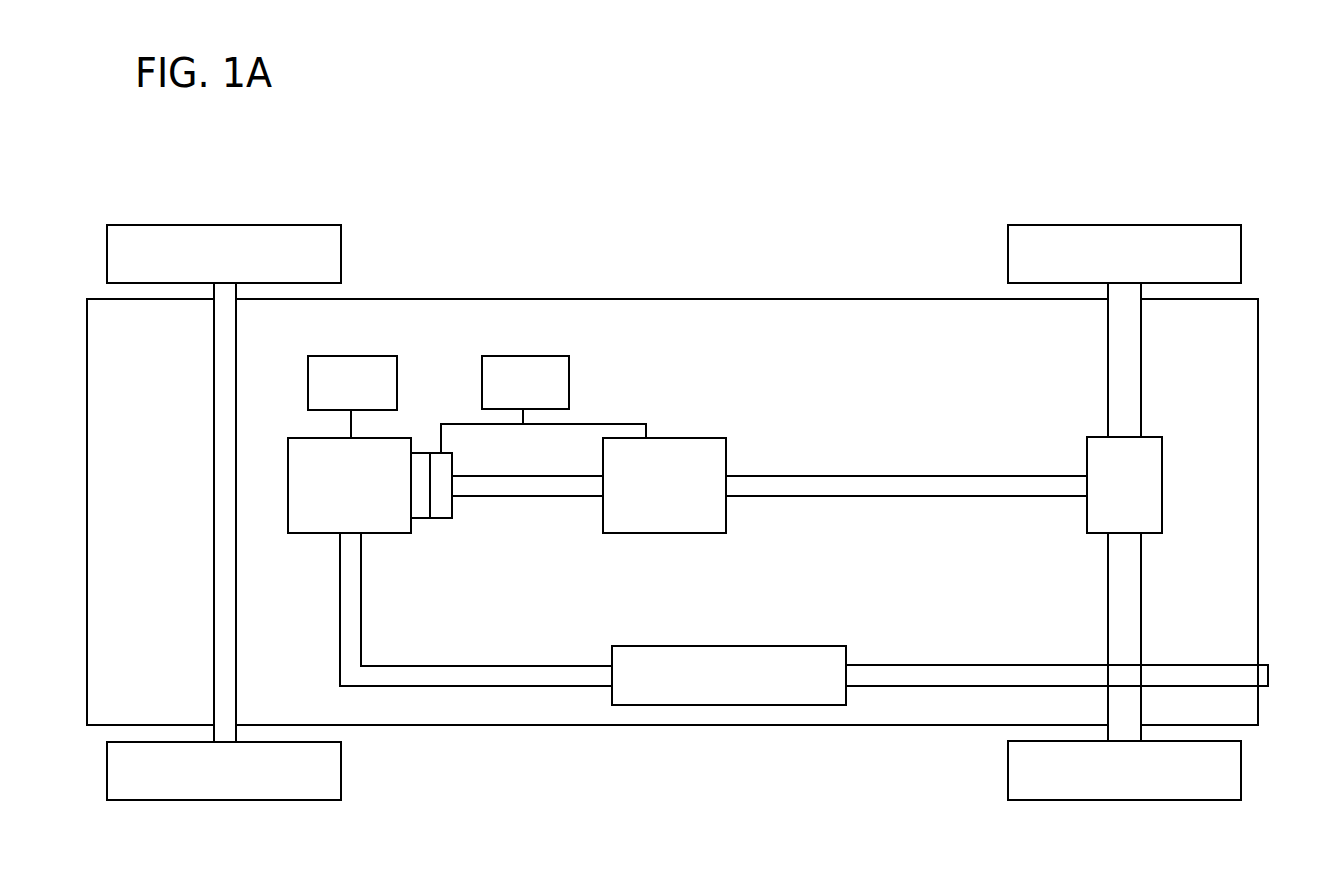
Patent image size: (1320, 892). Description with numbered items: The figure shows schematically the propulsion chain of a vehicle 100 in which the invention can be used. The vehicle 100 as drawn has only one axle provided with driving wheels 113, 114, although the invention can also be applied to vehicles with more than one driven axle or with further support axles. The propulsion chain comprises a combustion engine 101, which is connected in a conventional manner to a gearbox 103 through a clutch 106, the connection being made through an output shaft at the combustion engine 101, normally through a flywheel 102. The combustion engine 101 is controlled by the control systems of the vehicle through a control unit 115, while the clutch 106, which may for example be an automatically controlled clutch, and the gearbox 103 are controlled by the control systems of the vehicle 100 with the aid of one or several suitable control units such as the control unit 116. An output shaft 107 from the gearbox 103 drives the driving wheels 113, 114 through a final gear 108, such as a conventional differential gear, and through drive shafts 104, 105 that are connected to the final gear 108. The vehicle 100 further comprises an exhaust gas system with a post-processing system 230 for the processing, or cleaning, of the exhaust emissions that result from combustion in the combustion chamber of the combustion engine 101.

The vehicle 100 is at (570, 127).
The combustion engine 101 is at (320, 523).
The flywheel 102 is at (426, 517).
The gearbox 103 is at (667, 448).
The drive shaft 104 is at (1129, 358).
The drive shaft 105 is at (1133, 645).
The clutch 106 is at (442, 510).
The output shaft 107 is at (1002, 490).
The final gear 108 is at (1156, 480).
The driving wheel 113 is at (1237, 243).
The driving wheel 114 is at (1237, 773).
The control unit 115 is at (352, 392).
The control unit 116 is at (547, 395).
The post-processing system 230 is at (715, 657).